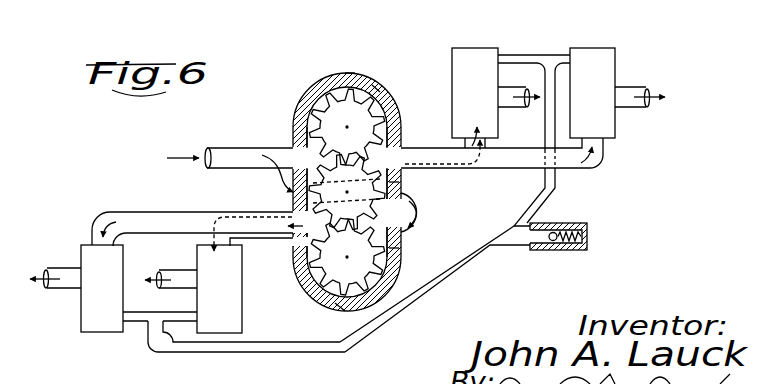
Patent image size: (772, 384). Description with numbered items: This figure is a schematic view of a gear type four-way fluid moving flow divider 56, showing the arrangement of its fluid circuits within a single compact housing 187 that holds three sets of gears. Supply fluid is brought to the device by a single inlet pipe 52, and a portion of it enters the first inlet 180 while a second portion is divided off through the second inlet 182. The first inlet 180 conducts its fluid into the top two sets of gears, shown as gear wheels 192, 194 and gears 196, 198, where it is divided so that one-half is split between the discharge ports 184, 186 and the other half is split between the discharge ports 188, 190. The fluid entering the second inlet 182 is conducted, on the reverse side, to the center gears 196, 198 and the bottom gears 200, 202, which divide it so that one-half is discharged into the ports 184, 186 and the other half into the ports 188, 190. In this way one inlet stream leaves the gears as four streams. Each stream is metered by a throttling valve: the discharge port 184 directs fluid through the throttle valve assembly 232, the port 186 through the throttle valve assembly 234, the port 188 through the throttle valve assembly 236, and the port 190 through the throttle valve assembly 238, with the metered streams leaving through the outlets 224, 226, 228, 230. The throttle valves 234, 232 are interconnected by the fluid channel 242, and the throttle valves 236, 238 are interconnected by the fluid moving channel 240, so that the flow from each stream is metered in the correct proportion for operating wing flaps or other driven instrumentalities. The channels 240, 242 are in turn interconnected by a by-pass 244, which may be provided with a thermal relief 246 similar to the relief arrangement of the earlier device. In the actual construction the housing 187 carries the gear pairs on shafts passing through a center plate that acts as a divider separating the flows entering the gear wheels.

The inlet pipe 52 is at (225, 153).
The four-way fluid moving flow divider 56 is at (320, 76).
The first inlet 180 is at (295, 147).
The second inlet 182 is at (279, 190).
The discharge port 184 is at (508, 168).
The discharge port 186 is at (425, 147).
The housing 187 is at (380, 82).
The discharge port 188 is at (167, 220).
The discharge port 190 is at (265, 240).
The gear wheel 192 is at (308, 115).
The gear wheel 194 is at (351, 73).
The gear 196 is at (290, 207).
The gear 198 is at (402, 182).
The gear 200 is at (334, 303).
The gear 202 is at (401, 248).
The outlet line 224 is at (643, 88).
The outlet line 226 is at (518, 108).
The outlet line 228 is at (62, 270).
The outlet line 230 is at (177, 273).
The throttle valve assembly 232 is at (592, 93).
The throttle valve assembly 234 is at (475, 93).
The throttle valve assembly 236 is at (102, 288).
The throttle valve assembly 238 is at (219, 289).
The fluid moving channel 240 is at (144, 326).
The fluid channel 242 is at (532, 57).
The by-pass 244 is at (447, 279).
The thermal relief 246 is at (562, 251).